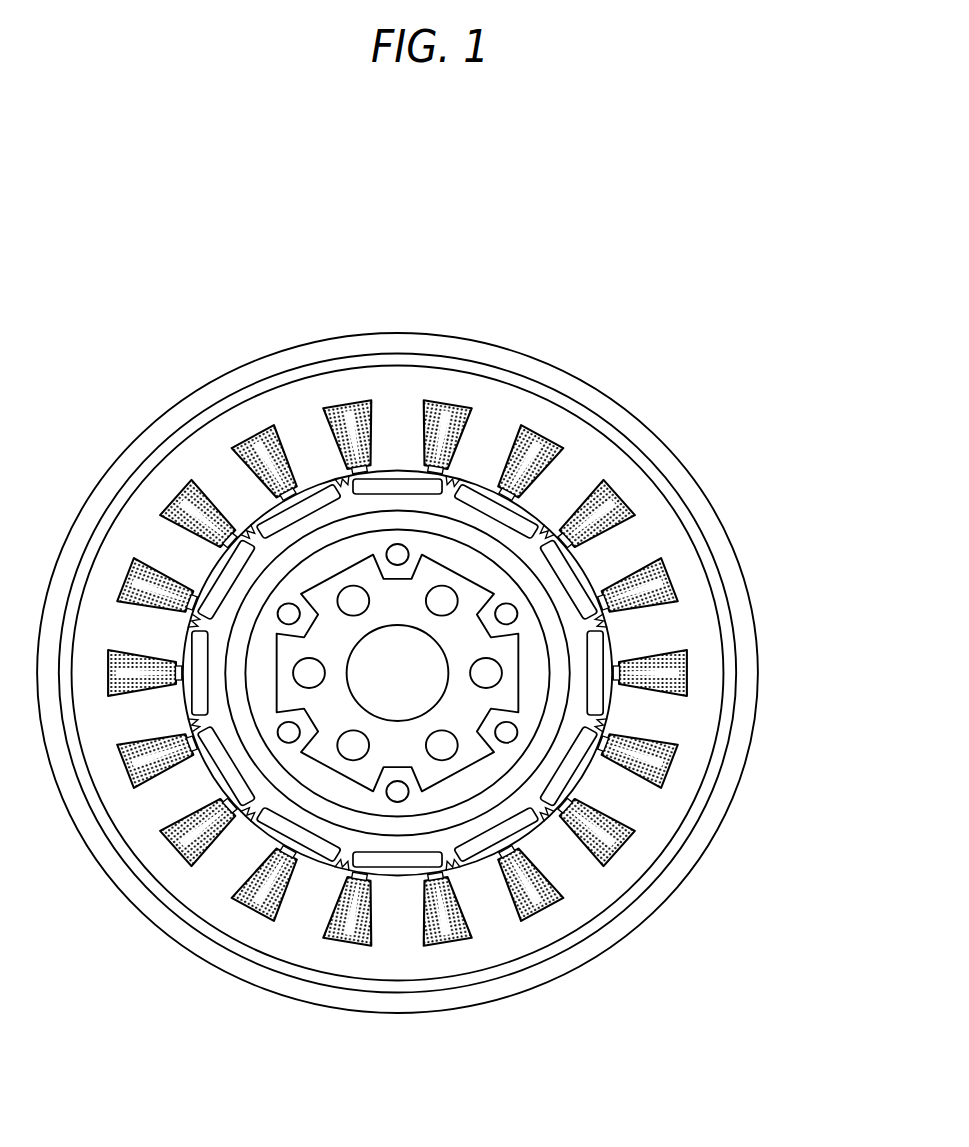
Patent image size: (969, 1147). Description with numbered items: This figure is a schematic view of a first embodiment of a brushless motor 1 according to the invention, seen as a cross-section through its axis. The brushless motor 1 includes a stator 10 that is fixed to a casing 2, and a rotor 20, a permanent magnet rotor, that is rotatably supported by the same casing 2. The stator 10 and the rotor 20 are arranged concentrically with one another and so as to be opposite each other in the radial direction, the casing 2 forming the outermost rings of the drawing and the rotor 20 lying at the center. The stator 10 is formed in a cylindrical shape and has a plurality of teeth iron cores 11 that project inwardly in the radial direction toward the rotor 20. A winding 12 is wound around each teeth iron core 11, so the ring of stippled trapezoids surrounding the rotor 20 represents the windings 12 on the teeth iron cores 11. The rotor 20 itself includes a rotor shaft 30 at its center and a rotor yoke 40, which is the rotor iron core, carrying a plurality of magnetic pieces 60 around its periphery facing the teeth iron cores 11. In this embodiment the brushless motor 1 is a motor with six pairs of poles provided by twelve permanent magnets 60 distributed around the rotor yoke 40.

The brushless motor 1 is at (328, 300).
The casing 2 is at (667, 457).
The stator 10 is at (687, 515).
The teeth iron core 11 is at (488, 437).
The winding 12 is at (537, 432).
The rotor 20 is at (615, 630).
The rotor shaft 30 is at (403, 835).
The rotor yoke 40 is at (338, 866).
The permanent magnet 60 is at (403, 490).